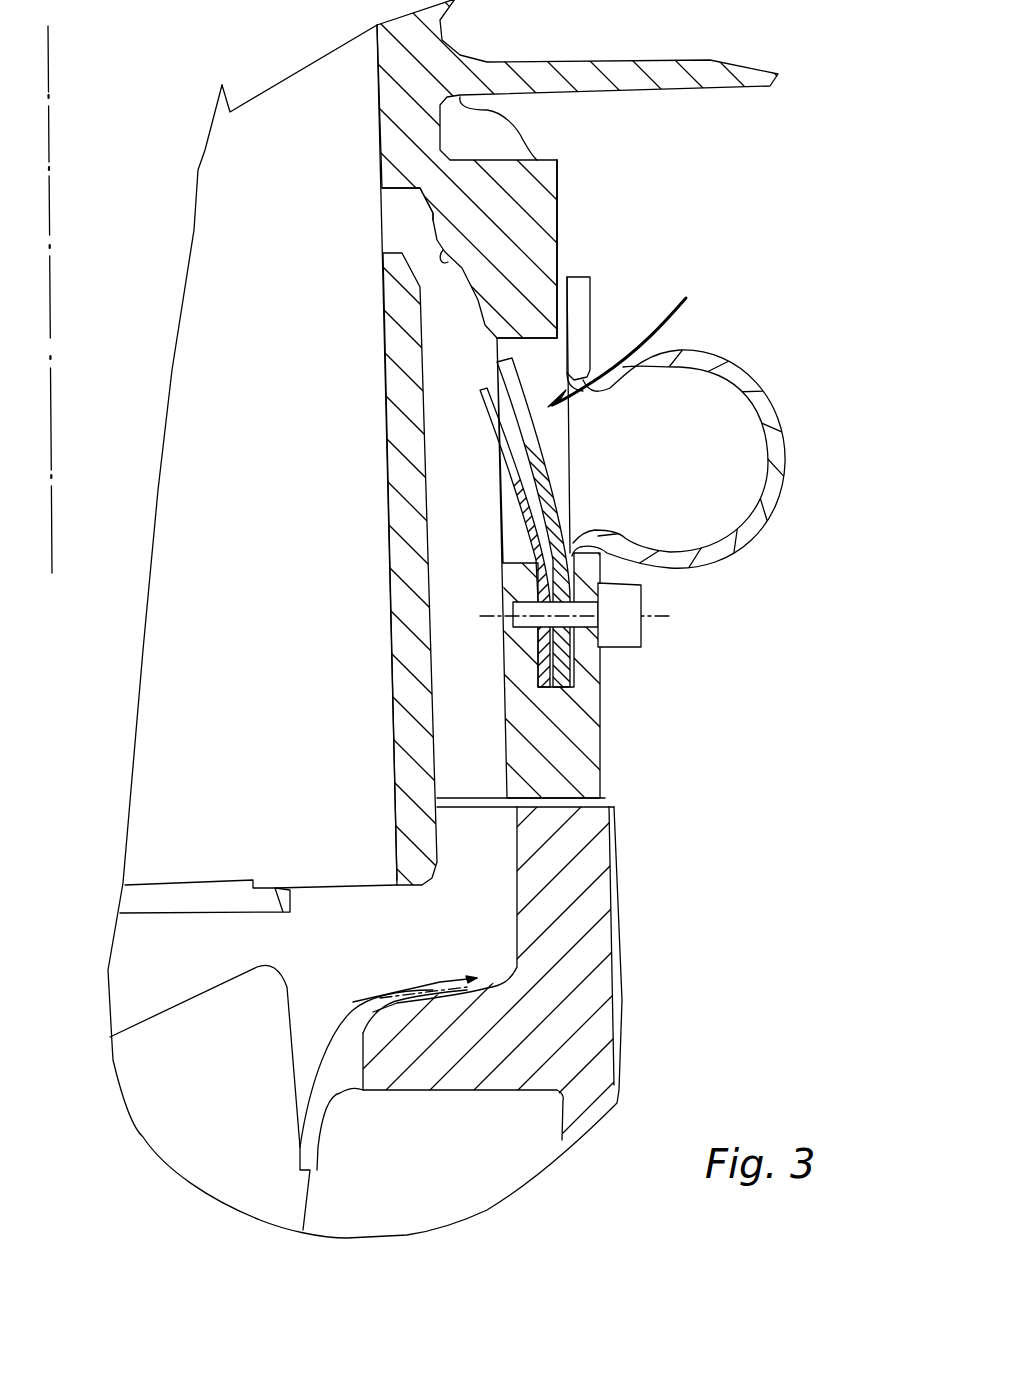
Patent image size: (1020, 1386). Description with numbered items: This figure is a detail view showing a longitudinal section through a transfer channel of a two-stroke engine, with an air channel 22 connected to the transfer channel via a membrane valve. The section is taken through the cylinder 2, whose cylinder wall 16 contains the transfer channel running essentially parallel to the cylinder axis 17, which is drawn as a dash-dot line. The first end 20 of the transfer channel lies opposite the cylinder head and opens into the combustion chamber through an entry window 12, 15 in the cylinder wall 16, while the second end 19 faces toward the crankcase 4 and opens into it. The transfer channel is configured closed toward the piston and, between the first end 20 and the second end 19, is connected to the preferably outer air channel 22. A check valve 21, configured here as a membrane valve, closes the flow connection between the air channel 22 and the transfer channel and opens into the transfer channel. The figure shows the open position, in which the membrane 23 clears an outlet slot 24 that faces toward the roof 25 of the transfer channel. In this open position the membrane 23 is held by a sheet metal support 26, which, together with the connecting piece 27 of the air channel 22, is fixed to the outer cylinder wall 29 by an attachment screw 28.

The cylinder 2 is at (487, 68).
The crankcase 4 is at (520, 1167).
The entry window 12 is at (382, 220).
The entry window 15 is at (382, 220).
The cylinder wall 16 is at (387, 590).
The cylinder axis 17 is at (57, 121).
The second end 19 is at (382, 966).
The first end 20 is at (392, 187).
The check valve 21 is at (626, 336).
The air channel 22 is at (766, 348).
The membrane 23 is at (540, 455).
The outlet slot 24 is at (480, 290).
The roof 25 is at (520, 243).
The sheet metal support 26 is at (517, 462).
The connecting piece 27 is at (573, 567).
The attachment screw 28 is at (632, 633).
The outer cylinder wall 29 is at (582, 728).